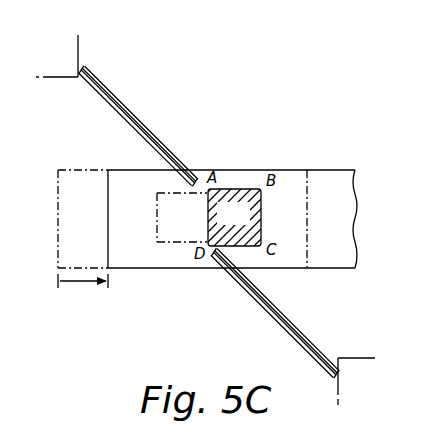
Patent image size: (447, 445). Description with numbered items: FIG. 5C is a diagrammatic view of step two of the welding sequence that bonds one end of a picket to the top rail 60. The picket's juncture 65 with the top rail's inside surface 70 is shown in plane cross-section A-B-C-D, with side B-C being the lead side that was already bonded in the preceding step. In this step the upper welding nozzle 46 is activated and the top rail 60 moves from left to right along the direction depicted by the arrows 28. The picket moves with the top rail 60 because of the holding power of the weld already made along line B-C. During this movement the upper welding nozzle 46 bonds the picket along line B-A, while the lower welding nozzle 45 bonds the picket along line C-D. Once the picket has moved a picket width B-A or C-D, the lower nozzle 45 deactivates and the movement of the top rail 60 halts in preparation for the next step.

The arrows 28 is at (200, 218).
The lower welding nozzle 45 is at (297, 330).
The upper welding nozzle 46 is at (121, 107).
The top rail 60 is at (290, 170).
The picket's juncture 65 is at (244, 224).
The top rail's inside surface 70 is at (344, 223).